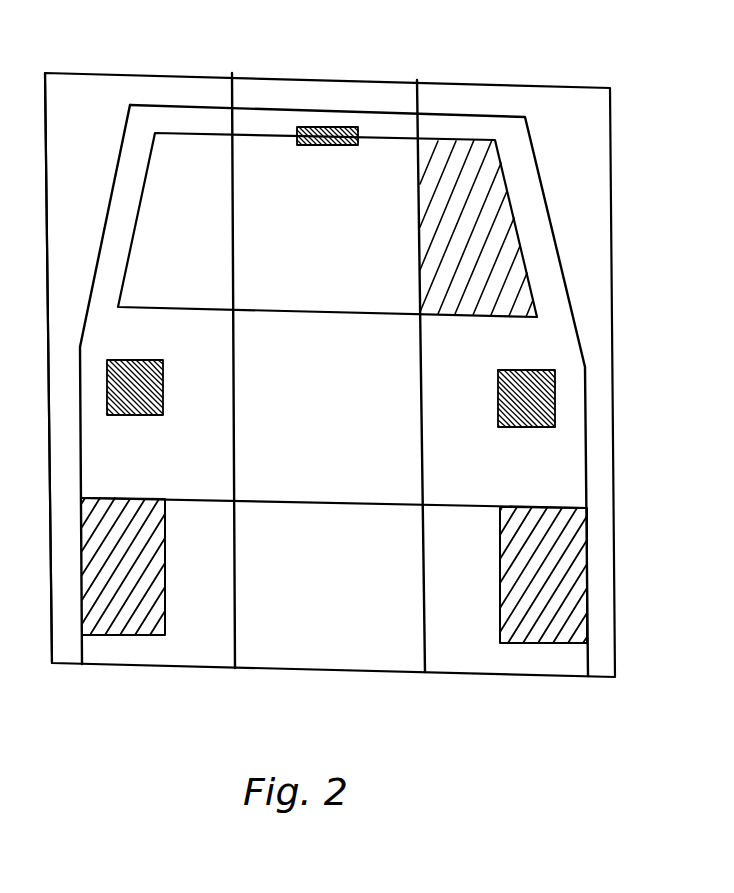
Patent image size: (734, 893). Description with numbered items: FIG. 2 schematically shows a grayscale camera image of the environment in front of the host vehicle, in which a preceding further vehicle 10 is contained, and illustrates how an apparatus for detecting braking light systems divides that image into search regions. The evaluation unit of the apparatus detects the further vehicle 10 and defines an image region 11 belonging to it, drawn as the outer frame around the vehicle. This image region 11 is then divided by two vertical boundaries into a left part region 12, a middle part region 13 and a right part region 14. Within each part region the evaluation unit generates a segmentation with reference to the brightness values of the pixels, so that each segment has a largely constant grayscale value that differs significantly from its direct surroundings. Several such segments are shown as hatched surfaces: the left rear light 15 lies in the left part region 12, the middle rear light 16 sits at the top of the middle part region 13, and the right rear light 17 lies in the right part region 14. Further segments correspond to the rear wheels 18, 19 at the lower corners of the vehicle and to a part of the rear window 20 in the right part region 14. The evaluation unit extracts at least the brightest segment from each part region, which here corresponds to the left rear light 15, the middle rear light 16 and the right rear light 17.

The further vehicle 10 is at (620, 198).
The image region 11 is at (613, 322).
The left part region 12 is at (87, 93).
The middle part region 13 is at (288, 90).
The right part region 14 is at (477, 97).
The left rear light 15 is at (127, 403).
The middle rear light 16 is at (326, 142).
The right rear light 17 is at (533, 417).
The rear wheel 18 is at (152, 585).
The rear wheel 19 is at (512, 588).
The part of rear window 20 is at (455, 297).